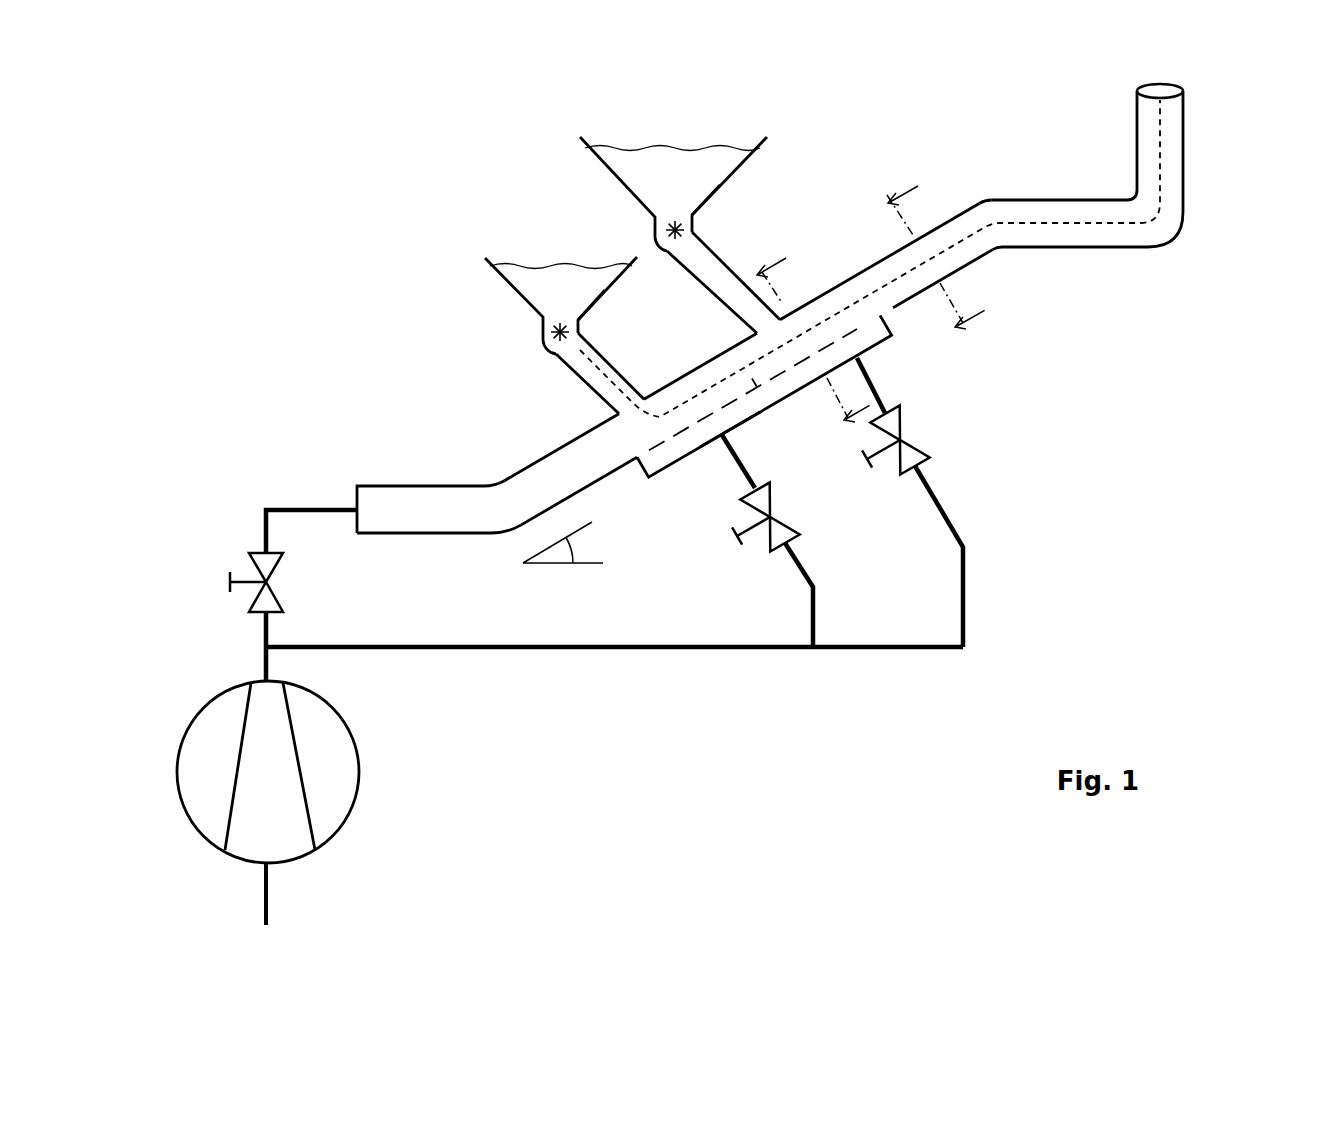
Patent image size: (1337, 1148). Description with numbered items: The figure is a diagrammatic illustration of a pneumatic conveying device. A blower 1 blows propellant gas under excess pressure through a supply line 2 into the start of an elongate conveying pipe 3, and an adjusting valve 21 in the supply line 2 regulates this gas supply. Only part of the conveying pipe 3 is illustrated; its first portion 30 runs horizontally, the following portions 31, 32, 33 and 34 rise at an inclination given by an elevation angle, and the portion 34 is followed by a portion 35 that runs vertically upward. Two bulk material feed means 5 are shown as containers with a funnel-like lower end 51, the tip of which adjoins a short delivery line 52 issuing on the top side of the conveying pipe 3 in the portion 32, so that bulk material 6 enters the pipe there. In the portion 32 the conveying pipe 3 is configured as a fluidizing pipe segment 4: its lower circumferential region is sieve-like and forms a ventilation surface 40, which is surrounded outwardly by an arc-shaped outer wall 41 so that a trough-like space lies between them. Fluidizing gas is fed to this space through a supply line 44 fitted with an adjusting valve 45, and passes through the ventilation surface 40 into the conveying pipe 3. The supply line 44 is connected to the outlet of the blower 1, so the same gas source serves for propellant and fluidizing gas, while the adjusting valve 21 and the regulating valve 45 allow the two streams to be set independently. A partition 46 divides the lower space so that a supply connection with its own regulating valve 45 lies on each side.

The blower 1 is at (345, 776).
The supply line 2 is at (298, 508).
The adjusting valve 21 is at (260, 552).
The conveying pipe 3 is at (410, 485).
The first portion 30 is at (432, 533).
The portion 31 is at (537, 458).
The portion 32 is at (853, 272).
The portion 33 is at (1128, 250).
The portion 34 is at (975, 264).
The portion 35 is at (1187, 157).
The fluidizing pipe segment 4 is at (673, 463).
The ventilation surface 40 is at (858, 332).
The outer wall 41 is at (802, 400).
The supply line 44 is at (540, 650).
The adjusting valve 45 is at (913, 443).
The partition 46 is at (758, 398).
The bulk material feed means 5 is at (600, 160).
The bulk material 6 is at (648, 192).
The funnel-like lower end 51 is at (702, 208).
The delivery line 52 is at (745, 318).